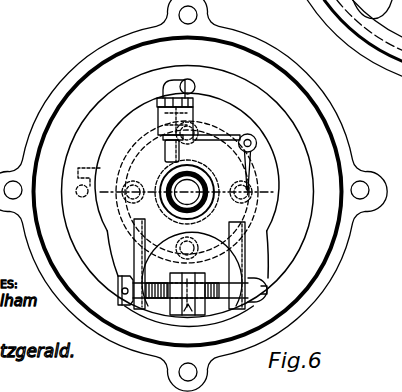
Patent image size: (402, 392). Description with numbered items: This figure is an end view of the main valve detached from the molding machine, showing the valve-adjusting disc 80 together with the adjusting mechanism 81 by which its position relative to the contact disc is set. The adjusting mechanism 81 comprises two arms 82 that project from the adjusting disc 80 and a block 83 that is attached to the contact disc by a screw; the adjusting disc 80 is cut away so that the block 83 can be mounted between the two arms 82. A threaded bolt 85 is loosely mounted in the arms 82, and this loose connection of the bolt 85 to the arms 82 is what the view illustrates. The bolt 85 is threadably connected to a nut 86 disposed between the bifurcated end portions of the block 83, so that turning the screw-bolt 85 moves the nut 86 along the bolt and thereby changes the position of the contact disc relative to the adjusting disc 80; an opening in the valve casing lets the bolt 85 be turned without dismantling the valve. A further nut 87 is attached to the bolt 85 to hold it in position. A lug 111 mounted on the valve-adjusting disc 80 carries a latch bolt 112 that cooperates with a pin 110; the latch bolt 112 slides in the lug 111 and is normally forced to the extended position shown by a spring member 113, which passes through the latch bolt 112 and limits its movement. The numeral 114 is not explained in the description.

The valve-adjusting disc 80 is at (278, 165).
The adjusting mechanism 81 is at (280, 266).
The arms 82 is at (145, 241).
The block 83 is at (200, 316).
The threaded bolt 85 is at (266, 299).
The nut 86 is at (188, 303).
The nut 87 is at (118, 276).
The pin 110 is at (187, 79).
The lug 111 is at (197, 106).
The latch bolt 112 is at (163, 92).
The spring member 113 is at (223, 134).
The plunger 114 is at (165, 144).